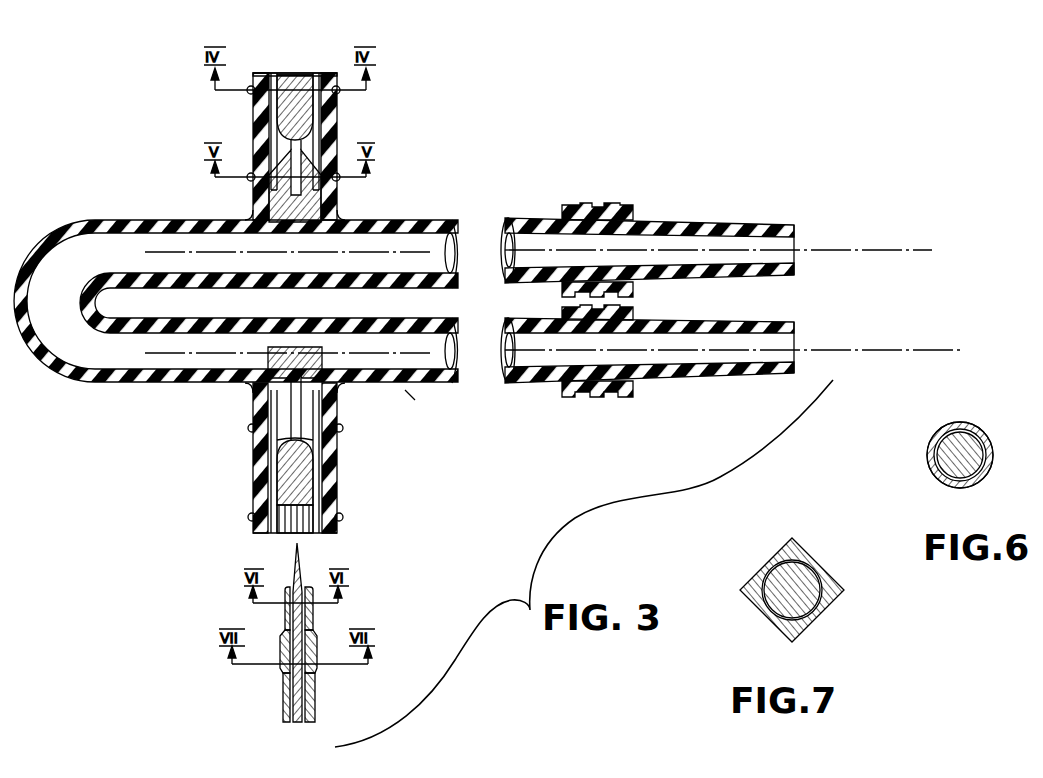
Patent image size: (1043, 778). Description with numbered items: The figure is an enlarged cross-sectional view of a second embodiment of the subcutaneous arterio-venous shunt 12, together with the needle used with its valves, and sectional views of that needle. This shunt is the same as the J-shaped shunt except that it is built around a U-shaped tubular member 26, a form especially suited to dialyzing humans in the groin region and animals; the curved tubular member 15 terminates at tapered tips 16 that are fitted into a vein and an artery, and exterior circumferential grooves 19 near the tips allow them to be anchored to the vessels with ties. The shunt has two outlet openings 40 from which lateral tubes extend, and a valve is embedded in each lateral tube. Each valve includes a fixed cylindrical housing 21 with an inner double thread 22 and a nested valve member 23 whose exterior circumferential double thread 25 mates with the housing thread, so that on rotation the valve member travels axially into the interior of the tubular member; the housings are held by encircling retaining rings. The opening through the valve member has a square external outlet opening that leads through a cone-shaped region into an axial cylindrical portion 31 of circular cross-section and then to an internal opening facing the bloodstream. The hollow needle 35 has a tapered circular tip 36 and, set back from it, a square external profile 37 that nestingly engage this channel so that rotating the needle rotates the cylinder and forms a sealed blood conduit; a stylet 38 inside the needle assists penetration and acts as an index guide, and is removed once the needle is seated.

In FIG. 3, the subcutaneous arterio-venous shunt 12 is at (421, 400).
In FIG. 3, the curved tubular member 15 is at (33, 277).
In FIG. 3, the tapered tip 16 is at (795, 233).
In FIG. 3, the exterior circumferential groove 19 is at (604, 213).
In FIG. 3, the fixed cylindrical housing 21 is at (262, 73).
In FIG. 3, the inner double thread 22 is at (324, 450).
In FIG. 3, the valve member 23 is at (290, 75).
In FIG. 3, the exterior circumferential double thread 25 is at (313, 413).
In FIG. 3, the U-shaped tubular member 26 is at (118, 378).
In FIG. 3, the axial cylindrical portion 31 is at (292, 410).
In FIG. 3, the hollow needle 35 is at (317, 680).
In FIG. 3, the circular tip 36 is at (313, 620).
In FIG. 6, the circular tip 36 is at (1017, 448).
In FIG. 3, the square external profile 37 is at (317, 664).
In FIG. 7, the square external profile 37 is at (838, 583).
In FIG. 3, the stylet 38 is at (302, 567).
In FIG. 6, the stylet 38 is at (972, 430).
In FIG. 7, the stylet 38 is at (832, 566).
In FIG. 3, the outlet opening 40 is at (322, 243).